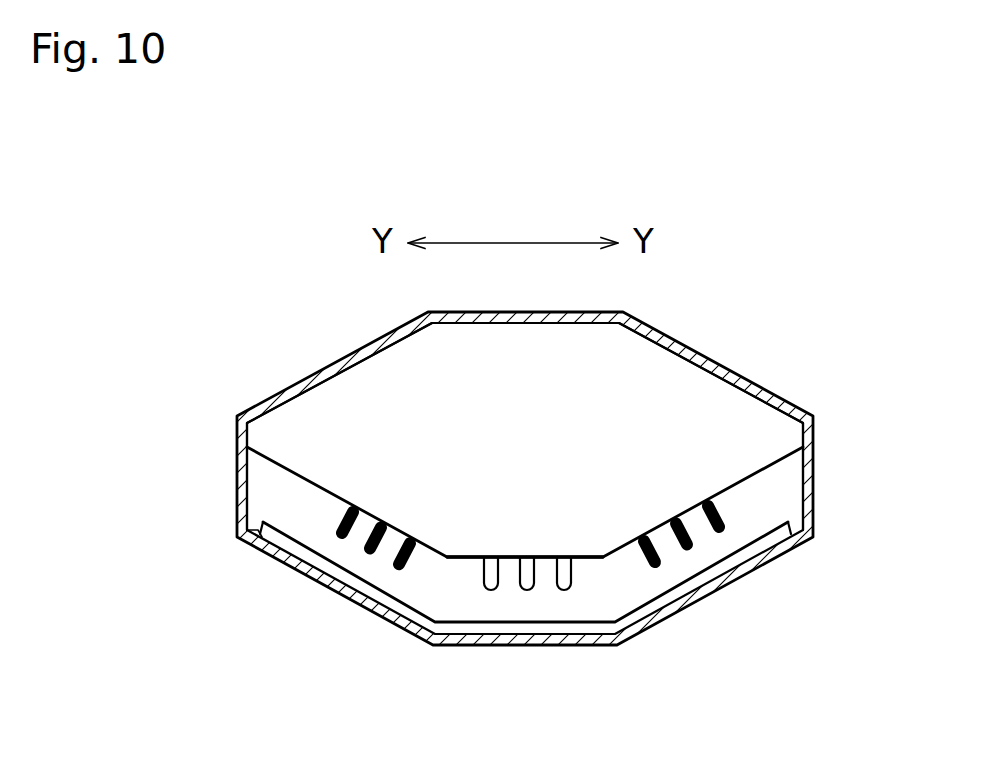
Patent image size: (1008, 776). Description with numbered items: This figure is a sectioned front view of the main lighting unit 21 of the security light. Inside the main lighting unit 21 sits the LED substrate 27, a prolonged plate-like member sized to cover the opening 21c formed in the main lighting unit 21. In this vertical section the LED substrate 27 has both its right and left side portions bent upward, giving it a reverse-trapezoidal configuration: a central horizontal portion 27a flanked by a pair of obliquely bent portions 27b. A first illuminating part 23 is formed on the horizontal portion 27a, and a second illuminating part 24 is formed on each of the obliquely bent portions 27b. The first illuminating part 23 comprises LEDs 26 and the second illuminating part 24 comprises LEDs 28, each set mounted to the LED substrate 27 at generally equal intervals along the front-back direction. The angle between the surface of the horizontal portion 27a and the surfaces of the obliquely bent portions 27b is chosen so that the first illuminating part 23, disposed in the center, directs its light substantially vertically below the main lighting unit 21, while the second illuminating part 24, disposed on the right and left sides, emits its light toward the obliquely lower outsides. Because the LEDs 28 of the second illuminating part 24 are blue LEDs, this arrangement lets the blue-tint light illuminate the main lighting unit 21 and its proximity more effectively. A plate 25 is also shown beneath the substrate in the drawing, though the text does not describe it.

The main lighting unit 21 is at (276, 360).
The opening 21c is at (257, 540).
The first illuminating part 23 is at (578, 603).
The second illuminating part 24 is at (340, 547).
The base plate 25 is at (449, 634).
The LEDs 26 is at (564, 590).
The LED substrate 27 is at (762, 430).
The horizontal portion 27a is at (467, 558).
The obliquely bent portions 27b is at (246, 467).
The LEDs 28 is at (368, 553).